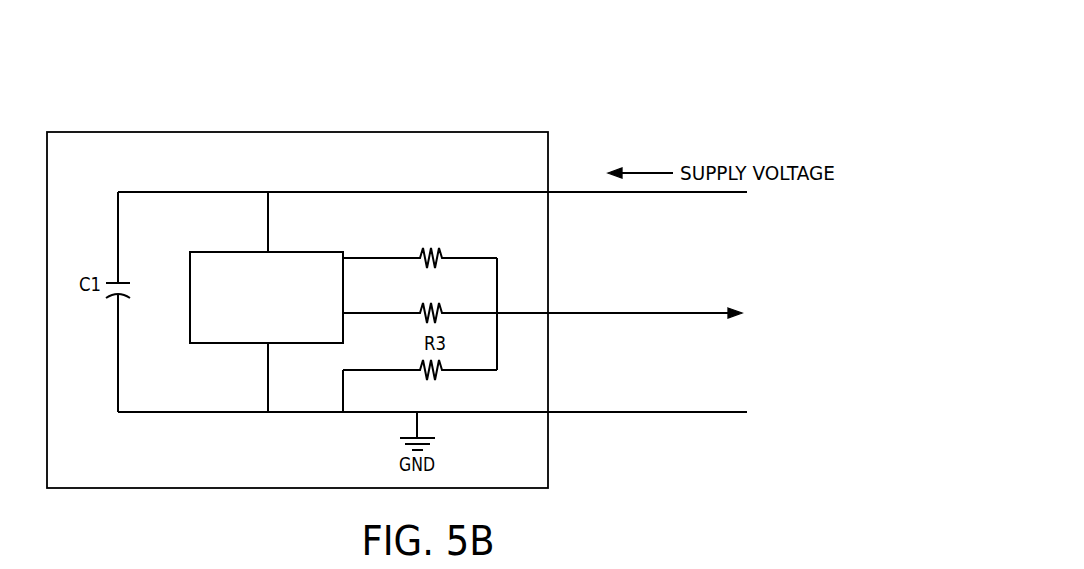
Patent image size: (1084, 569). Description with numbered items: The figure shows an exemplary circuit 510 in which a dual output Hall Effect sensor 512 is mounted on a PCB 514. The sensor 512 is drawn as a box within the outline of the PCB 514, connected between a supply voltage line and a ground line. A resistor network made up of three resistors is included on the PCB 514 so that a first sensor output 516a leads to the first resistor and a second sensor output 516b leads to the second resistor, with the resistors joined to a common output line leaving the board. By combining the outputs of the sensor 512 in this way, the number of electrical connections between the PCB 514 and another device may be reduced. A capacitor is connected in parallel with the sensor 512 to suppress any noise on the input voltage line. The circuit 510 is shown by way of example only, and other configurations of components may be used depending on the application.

The circuit 510 is at (363, 72).
The dual output Hall Effect sensor 512 is at (210, 252).
The PCB 514 is at (158, 131).
The first sensor output 516a is at (401, 257).
The second sensor output 516b is at (390, 312).